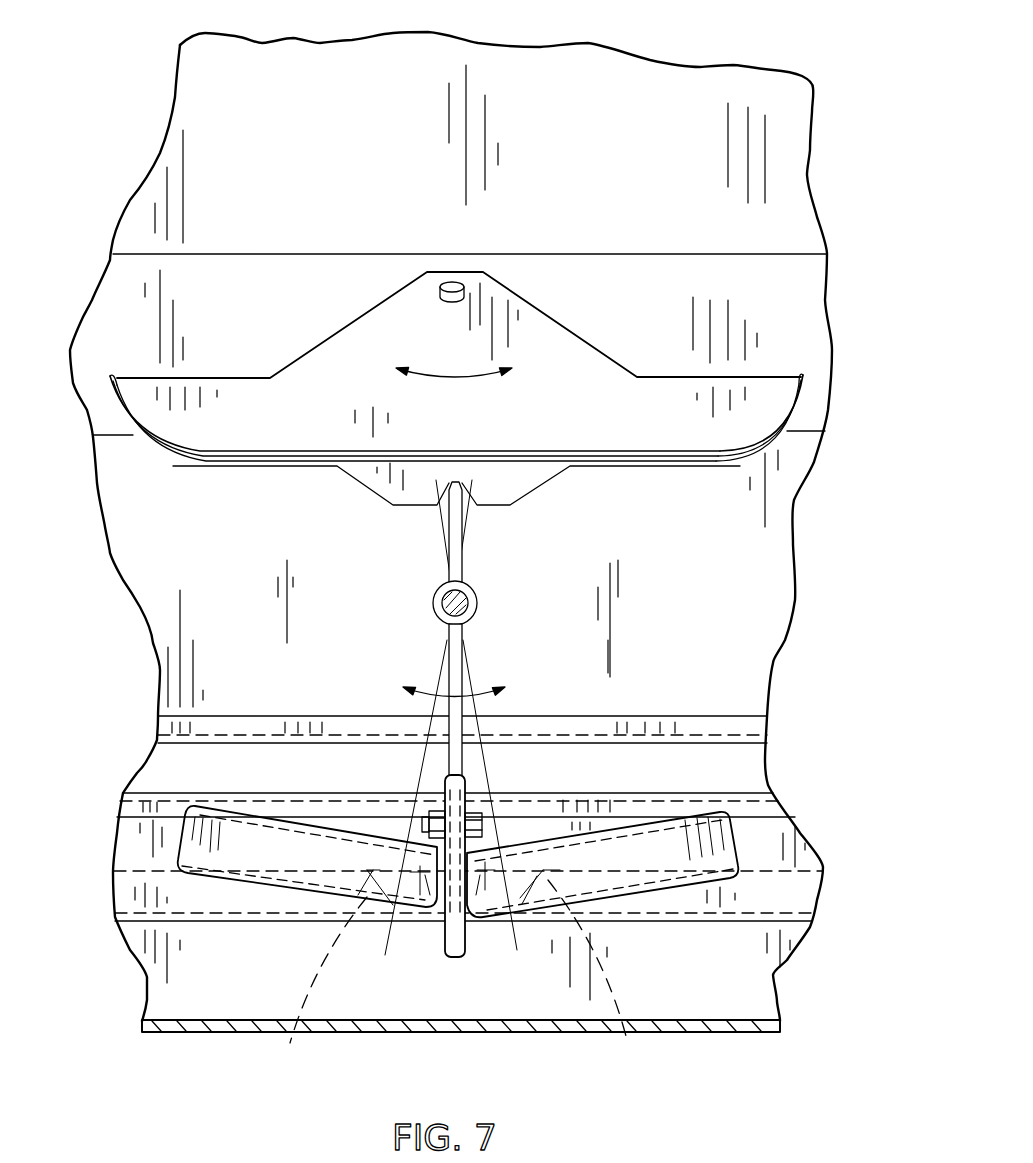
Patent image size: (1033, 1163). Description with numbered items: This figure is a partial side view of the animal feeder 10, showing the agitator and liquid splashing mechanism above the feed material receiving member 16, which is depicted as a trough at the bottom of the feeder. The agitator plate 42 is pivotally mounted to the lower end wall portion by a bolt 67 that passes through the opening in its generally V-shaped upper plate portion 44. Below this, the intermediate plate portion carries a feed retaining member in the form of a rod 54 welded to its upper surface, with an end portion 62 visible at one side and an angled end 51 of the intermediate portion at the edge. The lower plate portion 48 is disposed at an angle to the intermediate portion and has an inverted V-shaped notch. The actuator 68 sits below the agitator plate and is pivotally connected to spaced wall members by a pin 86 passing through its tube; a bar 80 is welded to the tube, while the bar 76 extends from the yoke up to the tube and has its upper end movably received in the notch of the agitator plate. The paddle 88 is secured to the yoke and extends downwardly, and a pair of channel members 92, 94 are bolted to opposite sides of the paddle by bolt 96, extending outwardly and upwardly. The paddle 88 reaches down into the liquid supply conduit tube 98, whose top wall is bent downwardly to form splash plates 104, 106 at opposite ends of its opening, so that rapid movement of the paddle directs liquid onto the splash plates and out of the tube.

The animal feeder 10 is at (747, 52).
The feed material receiving member 16 is at (752, 977).
The agitator plate 42 is at (623, 346).
The upper plate portion 44 is at (438, 352).
The lower plate portion 48 is at (510, 483).
The angled end 51 is at (150, 454).
The rod 54 is at (456, 417).
The end portion 62 is at (141, 422).
The bolt 67 is at (456, 283).
The actuator 68 is at (447, 607).
The bar 76 is at (457, 662).
The bar 80 is at (453, 551).
The pin 86 is at (463, 605).
The paddle 88 is at (458, 950).
The channel member 92 is at (292, 840).
The channel member 94 is at (610, 842).
The bolt 96 is at (483, 822).
The liquid supply conduit tube 98 is at (765, 882).
The splash plate 104 is at (313, 987).
The splash plate 106 is at (601, 978).